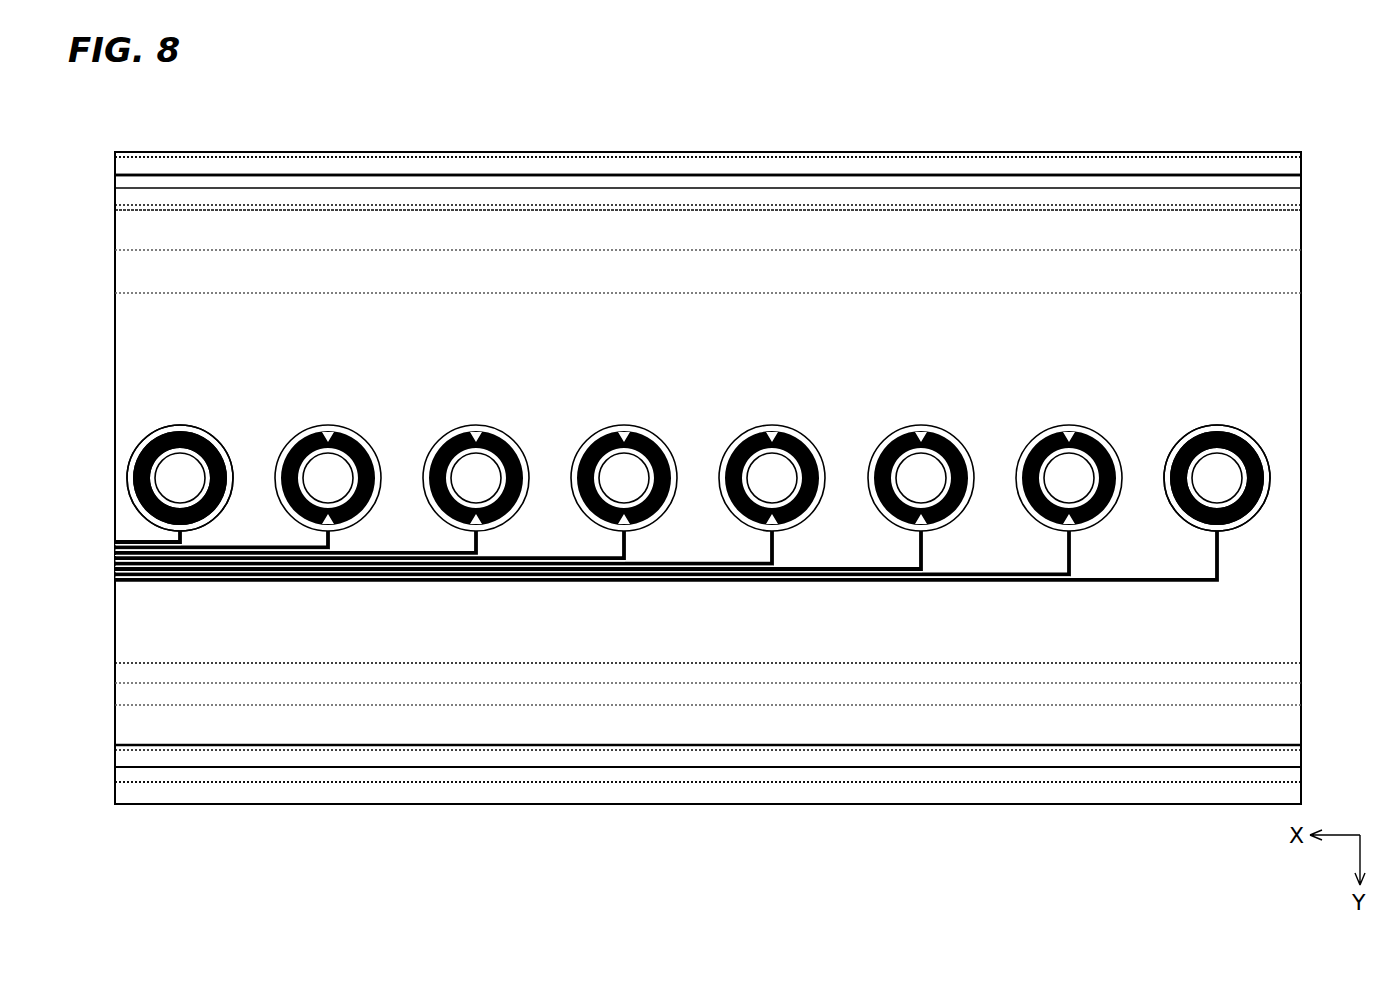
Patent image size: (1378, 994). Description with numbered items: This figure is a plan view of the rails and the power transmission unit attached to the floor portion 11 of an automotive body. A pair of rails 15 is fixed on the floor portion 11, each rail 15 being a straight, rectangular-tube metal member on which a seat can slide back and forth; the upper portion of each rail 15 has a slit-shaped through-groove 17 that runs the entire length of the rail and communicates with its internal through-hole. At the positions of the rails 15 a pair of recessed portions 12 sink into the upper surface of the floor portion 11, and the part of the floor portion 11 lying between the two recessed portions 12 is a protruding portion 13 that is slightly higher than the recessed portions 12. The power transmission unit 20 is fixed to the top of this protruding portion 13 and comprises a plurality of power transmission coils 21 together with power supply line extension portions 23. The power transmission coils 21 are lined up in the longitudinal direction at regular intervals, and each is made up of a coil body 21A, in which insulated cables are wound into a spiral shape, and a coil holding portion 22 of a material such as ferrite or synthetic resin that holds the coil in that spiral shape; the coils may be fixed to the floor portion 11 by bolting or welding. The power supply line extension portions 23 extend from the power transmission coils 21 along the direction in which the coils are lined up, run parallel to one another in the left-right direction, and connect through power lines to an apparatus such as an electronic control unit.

The floor portion 11 is at (1301, 355).
The recessed portion 12 is at (1257, 229).
The protruding portion 13 is at (1283, 412).
The rail 15 is at (571, 165).
The through-groove 17 is at (478, 190).
The power transmission unit 20 is at (1165, 335).
The power transmission coil 21 is at (184, 406).
The coil body 21A is at (203, 437).
The coil holding portion 22 is at (233, 497).
The power supply line extension portion 23 is at (660, 565).